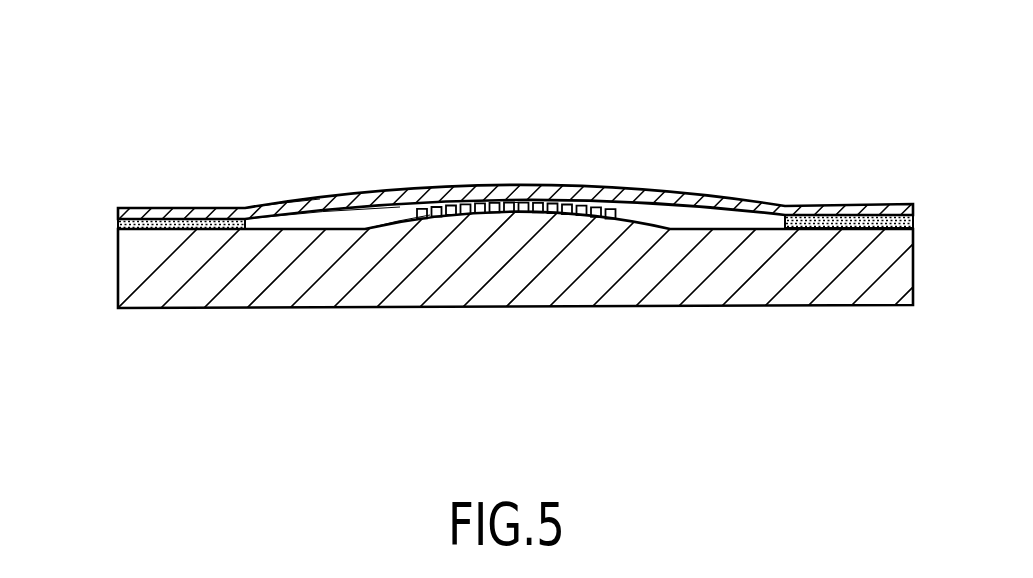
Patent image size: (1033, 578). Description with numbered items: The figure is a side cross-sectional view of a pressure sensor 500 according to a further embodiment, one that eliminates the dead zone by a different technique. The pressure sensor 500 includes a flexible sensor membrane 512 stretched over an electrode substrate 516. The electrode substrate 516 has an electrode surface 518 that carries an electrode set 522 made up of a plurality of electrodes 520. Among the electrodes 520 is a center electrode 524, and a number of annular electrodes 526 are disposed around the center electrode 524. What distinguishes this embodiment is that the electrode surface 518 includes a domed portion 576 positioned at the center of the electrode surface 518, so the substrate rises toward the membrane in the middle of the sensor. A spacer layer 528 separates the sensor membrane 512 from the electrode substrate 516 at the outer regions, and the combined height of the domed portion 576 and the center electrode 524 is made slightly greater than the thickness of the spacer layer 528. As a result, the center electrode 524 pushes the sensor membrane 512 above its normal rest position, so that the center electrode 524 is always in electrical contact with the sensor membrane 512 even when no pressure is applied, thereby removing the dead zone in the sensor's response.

The pressure sensor 500 is at (553, 93).
The flexible sensor membrane 512 is at (667, 192).
The electrode substrate 516 is at (117, 283).
The electrode surface 518 is at (284, 214).
The electrodes 520 is at (457, 216).
The electrode set 522 is at (397, 212).
The center electrode 524 is at (514, 208).
The annular electrodes 526 is at (610, 214).
The spacer layer 528 is at (118, 227).
The domed portion 576 is at (358, 219).